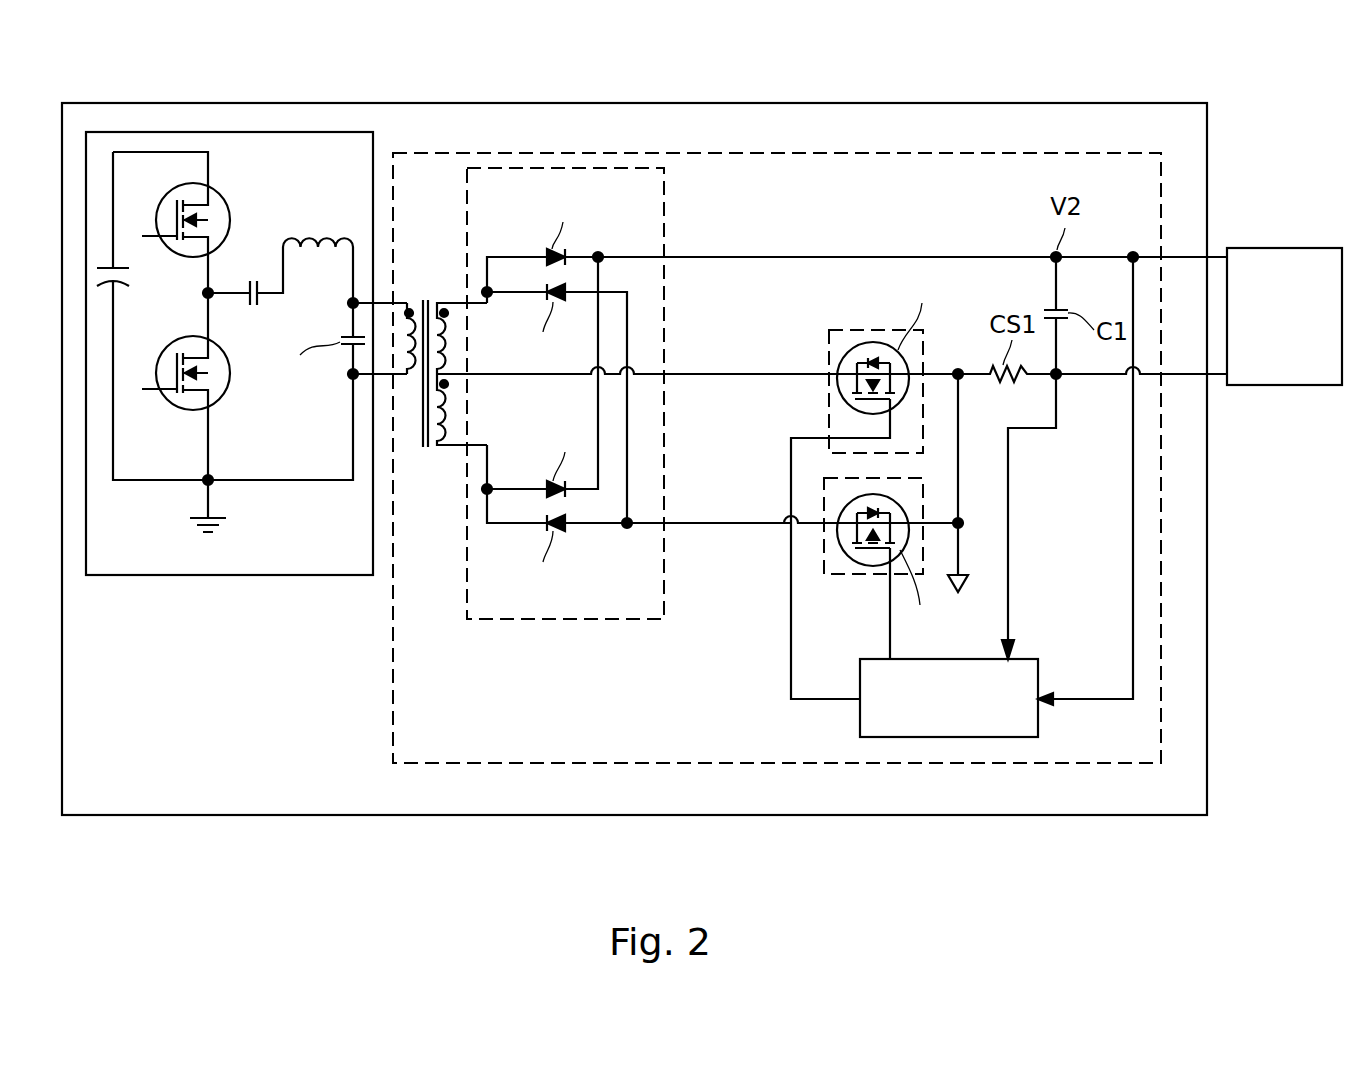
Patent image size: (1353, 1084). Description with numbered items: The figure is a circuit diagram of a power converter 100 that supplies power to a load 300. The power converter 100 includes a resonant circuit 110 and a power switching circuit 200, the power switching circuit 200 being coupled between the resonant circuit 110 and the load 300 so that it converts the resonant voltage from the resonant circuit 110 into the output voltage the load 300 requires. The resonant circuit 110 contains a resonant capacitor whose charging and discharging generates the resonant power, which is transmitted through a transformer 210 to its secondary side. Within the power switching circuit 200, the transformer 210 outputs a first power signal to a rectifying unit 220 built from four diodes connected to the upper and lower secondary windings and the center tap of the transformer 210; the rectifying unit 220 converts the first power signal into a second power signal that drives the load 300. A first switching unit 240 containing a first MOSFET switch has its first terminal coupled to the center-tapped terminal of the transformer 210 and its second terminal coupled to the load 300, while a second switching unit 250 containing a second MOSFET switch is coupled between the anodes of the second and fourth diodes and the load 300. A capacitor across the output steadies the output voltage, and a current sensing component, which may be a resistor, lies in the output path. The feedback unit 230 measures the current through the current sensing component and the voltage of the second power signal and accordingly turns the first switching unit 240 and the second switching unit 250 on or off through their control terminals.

The power converter 100 is at (1153, 103).
The resonant circuit 110 is at (230, 131).
The power switching circuit 200 is at (1045, 152).
The transformer 210 is at (422, 300).
The rectifying unit 220 is at (545, 168).
The feedback unit 230 is at (950, 737).
The first switching unit 240 is at (848, 330).
The second switching unit 250 is at (850, 575).
The load 300 is at (1260, 248).